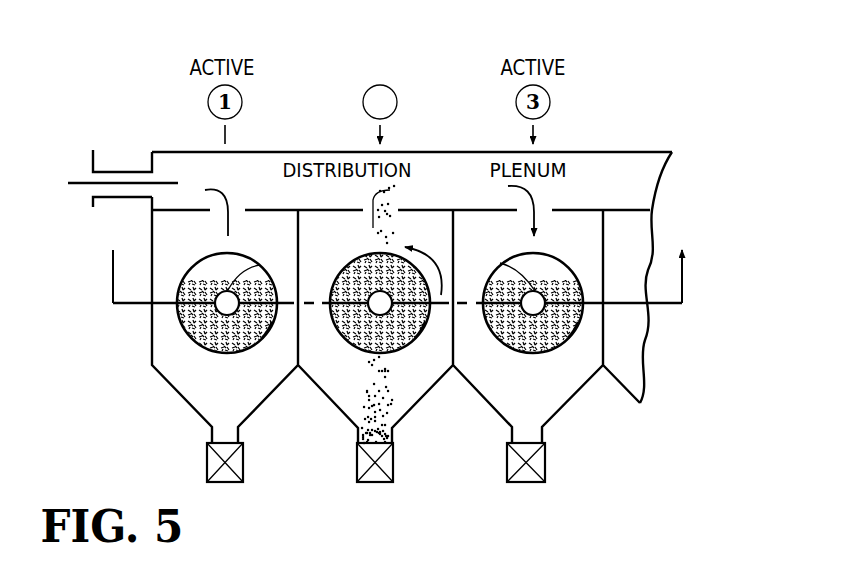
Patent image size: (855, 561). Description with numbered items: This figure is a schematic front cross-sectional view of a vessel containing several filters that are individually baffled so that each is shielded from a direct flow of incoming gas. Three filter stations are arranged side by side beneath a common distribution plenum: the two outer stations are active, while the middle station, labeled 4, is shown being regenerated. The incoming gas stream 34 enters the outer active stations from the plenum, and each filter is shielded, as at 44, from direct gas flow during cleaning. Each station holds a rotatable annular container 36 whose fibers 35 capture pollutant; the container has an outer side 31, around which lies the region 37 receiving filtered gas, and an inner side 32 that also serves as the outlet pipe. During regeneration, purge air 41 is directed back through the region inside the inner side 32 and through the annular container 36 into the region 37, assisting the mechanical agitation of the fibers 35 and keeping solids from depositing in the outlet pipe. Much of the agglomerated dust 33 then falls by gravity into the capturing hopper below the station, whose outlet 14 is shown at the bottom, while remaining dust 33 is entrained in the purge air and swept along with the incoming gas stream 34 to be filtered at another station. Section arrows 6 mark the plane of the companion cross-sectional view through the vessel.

The filter cell being regenerated 4 is at (382, 75).
The section line 6- 6 is at (395, 259).
The discharge valve 14 is at (558, 468).
The outer side 31 is at (505, 348).
The inner side 32 is at (500, 263).
The dust 33 is at (424, 201).
The incoming gas stream 34 is at (542, 218).
The fibers 35 is at (575, 335).
The annular container 36 is at (501, 257).
The region around the outer side 37 is at (538, 395).
The purge air 41 is at (415, 192).
The shielding baffle 44 is at (623, 210).